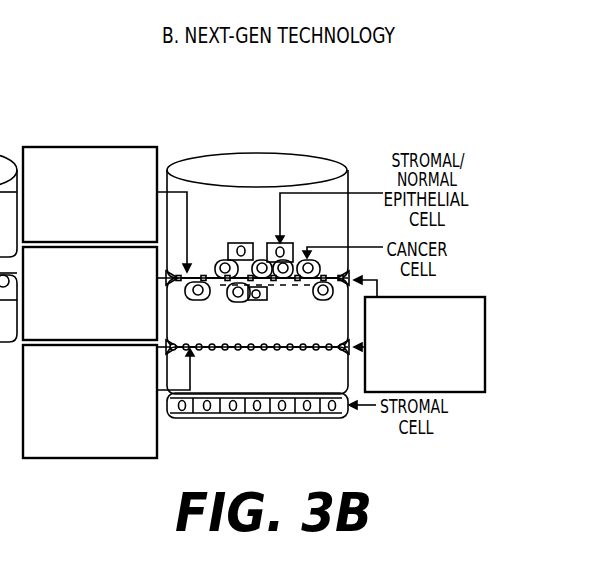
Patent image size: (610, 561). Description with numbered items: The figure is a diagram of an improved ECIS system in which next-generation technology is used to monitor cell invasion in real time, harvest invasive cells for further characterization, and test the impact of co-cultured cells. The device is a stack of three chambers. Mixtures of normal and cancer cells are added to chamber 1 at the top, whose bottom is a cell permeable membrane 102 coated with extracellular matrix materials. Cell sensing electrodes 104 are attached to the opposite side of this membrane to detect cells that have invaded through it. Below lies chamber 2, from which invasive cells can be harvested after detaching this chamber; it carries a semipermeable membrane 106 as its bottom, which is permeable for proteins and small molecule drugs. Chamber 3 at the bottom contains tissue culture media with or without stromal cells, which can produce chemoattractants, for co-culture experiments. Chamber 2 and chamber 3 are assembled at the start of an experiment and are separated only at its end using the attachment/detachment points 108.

The chamber # 1 is at (251, 233).
The chamber # 2 is at (251, 333).
The chamber # 3 is at (251, 383).
The cell permeable membrane 102 is at (77, 231).
The cell sensing electrodes 104 is at (77, 330).
The semipermeable membrane 106 is at (77, 448).
The attachment/detachment points 108 is at (413, 385).